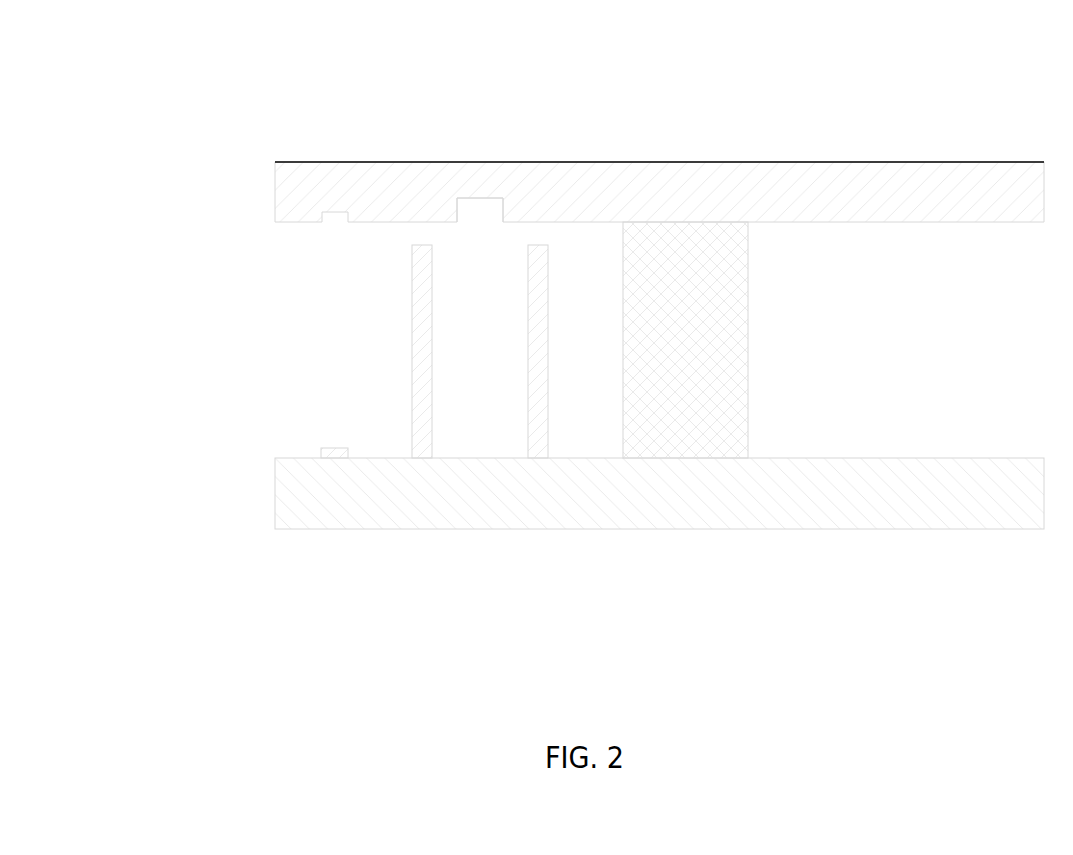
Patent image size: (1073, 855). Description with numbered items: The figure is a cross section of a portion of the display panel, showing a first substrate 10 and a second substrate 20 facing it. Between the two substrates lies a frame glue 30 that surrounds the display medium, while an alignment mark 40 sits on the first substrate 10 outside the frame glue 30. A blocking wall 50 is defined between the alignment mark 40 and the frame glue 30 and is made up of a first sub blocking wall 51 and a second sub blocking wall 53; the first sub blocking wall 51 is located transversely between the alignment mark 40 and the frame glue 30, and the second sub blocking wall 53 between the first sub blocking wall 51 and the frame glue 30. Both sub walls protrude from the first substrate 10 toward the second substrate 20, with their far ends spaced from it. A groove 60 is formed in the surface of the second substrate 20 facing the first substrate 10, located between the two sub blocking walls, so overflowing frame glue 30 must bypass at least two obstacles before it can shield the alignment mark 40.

The first substrate 10 is at (495, 495).
The second substrate 20 is at (582, 190).
The frame glue 30 is at (693, 310).
The alignment mark 40 is at (332, 457).
The blocking wall 50 is at (348, 282).
The first sub blocking wall 51 is at (424, 321).
The second sub blocking wall 53 is at (543, 295).
The groove 60 is at (482, 190).